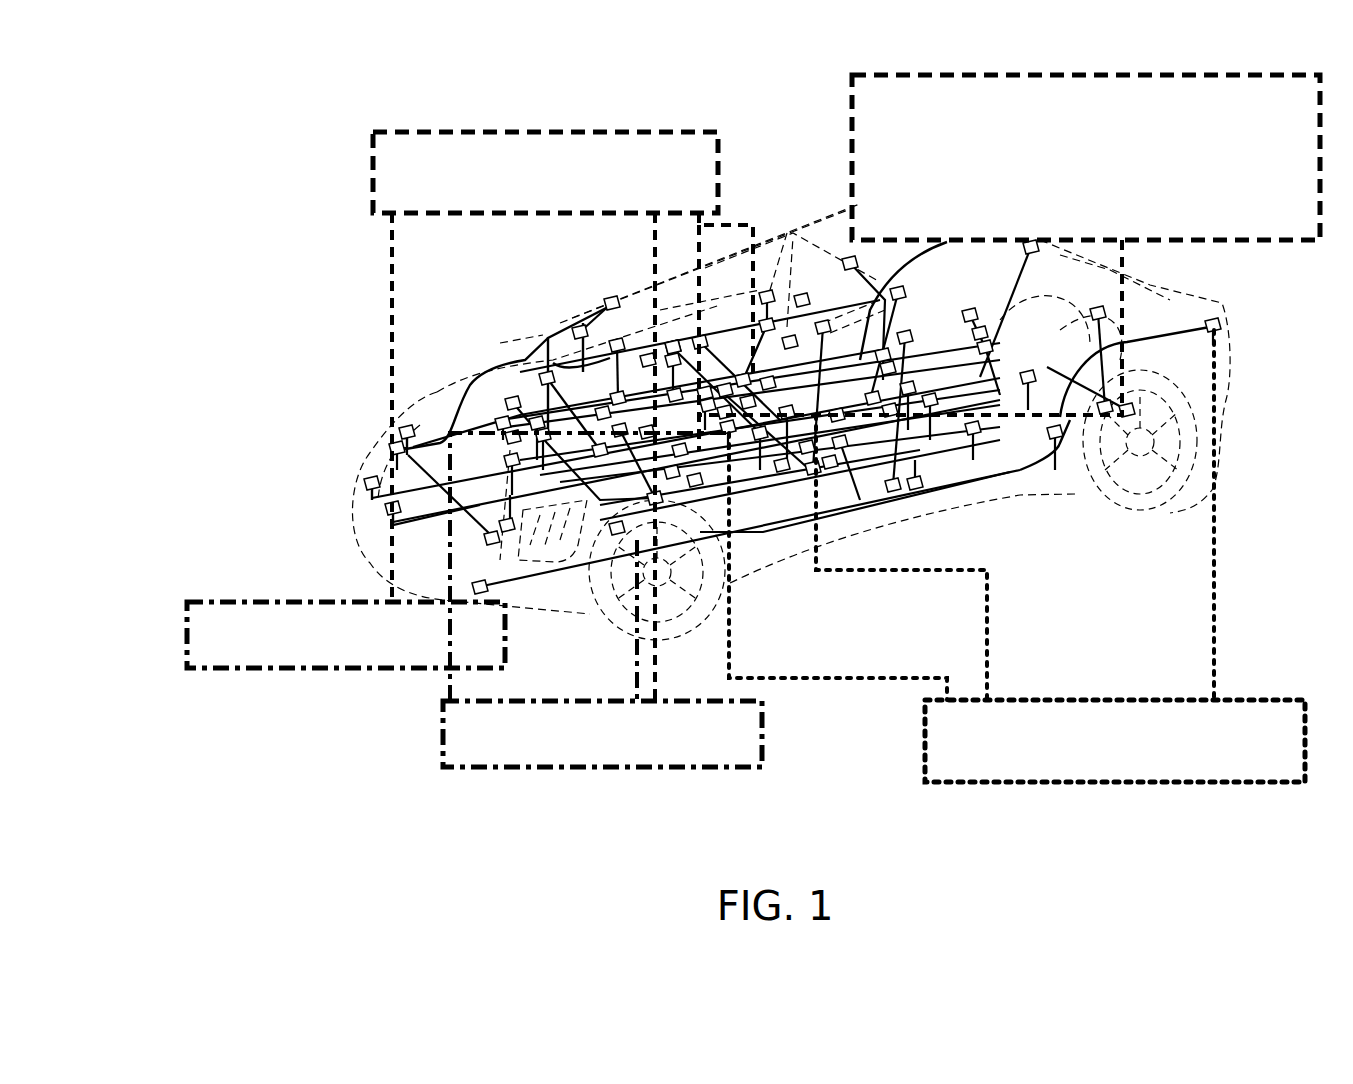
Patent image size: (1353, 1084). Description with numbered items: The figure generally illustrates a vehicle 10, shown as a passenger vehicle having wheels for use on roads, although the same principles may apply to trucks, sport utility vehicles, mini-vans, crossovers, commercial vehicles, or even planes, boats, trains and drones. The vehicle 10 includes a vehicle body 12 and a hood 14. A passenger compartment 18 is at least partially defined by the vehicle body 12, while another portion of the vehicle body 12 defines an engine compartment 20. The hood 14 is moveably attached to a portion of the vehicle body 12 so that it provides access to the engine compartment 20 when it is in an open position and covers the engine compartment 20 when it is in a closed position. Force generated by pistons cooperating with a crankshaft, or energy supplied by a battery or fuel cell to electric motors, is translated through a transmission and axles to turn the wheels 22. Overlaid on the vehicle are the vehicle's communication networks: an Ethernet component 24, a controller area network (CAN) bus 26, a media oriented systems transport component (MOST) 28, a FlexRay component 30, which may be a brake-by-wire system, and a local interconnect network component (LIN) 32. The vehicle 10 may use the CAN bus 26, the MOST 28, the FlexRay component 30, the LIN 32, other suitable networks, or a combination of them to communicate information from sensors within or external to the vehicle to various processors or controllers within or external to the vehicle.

The vehicle 10 is at (150, 220).
The vehicle body 12 is at (755, 360).
The hood 14 is at (486, 366).
The passenger compartment 18 is at (662, 306).
The engine compartment 20 is at (318, 437).
The wheels 22 is at (612, 593).
The Ethernet component 24 is at (152, 635).
The controller area network (CAN) bus 26 is at (345, 167).
The media oriented systems transport component (MOST) 28 is at (825, 144).
The FlexRay component 30 is at (405, 733).
The local interconnect network component (LIN) 32 is at (897, 734).